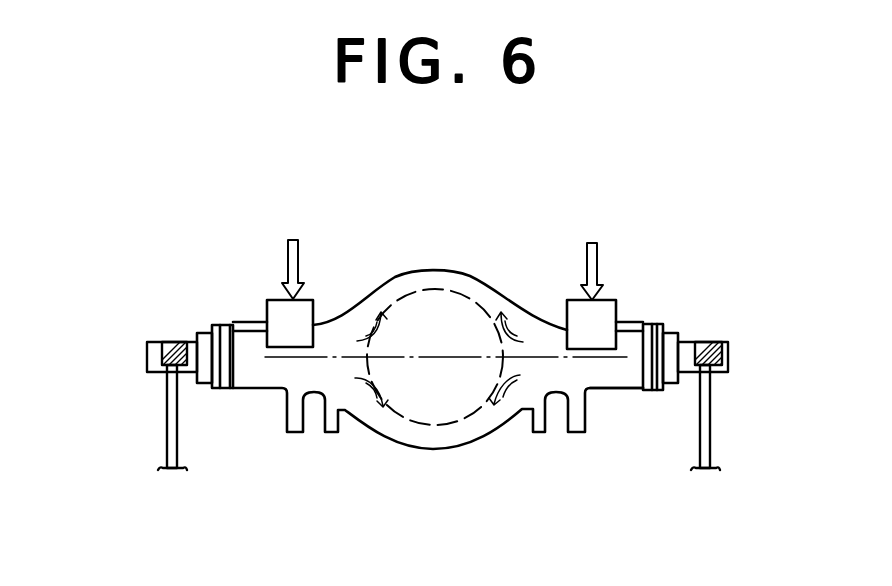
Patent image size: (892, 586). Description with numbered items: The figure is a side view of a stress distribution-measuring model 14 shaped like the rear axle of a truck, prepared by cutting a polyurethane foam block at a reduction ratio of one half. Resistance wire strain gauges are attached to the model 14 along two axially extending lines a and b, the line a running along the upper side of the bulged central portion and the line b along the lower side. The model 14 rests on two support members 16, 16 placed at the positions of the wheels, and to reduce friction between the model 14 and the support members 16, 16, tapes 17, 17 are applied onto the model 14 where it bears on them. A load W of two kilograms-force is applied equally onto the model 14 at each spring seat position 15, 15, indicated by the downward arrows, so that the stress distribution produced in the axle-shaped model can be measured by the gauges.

The model 14 is at (433, 260).
The spring seat position 15 is at (275, 312).
The support member 16 is at (167, 418).
The tape 17 is at (168, 341).
The line a is at (483, 278).
The line b is at (602, 360).
The applied load W is at (441, 251).